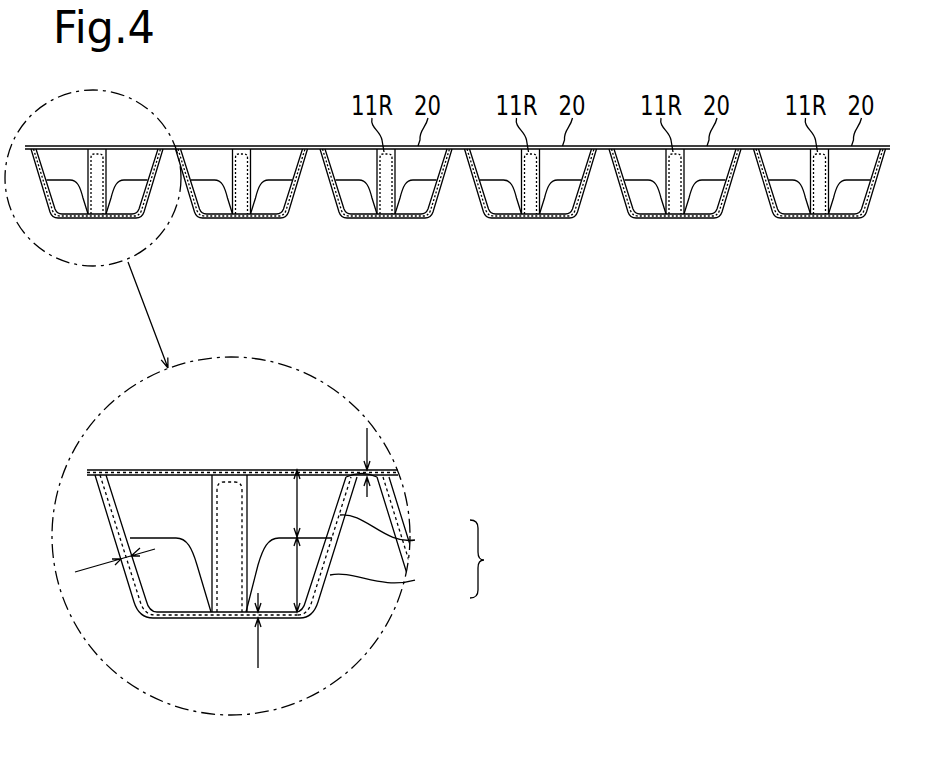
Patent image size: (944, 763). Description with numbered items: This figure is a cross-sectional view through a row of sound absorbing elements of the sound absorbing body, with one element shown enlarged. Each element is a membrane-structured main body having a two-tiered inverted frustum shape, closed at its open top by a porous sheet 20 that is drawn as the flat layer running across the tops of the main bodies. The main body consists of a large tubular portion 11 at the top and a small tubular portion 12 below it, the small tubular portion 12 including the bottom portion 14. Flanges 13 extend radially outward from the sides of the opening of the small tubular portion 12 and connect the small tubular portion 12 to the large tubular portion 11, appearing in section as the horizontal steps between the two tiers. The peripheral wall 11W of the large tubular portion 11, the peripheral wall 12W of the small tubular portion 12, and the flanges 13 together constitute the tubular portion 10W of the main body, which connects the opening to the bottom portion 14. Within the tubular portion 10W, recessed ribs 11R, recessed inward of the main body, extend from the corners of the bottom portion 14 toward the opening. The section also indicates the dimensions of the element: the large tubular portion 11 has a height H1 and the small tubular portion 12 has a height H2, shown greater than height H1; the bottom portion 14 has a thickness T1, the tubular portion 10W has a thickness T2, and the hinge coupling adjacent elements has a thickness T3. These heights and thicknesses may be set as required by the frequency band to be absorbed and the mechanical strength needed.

The porous sheet 20 is at (263, 468).
The rib 11R is at (227, 480).
The large tubular portion 11 is at (103, 507).
The small tubular portion 12 is at (122, 587).
The flange 13 is at (152, 537).
The bottom portion 14 is at (170, 620).
The height of the large tubular portion H1 is at (283, 503).
The height of the small tubular portion H2 is at (283, 574).
The thickness of the bottom portion T1 is at (272, 633).
The thickness of the tubular portion T2 is at (115, 553).
The thickness of the hinge T3 is at (351, 462).
The peripheral wall of the large tubular portion 11W is at (402, 534).
The peripheral wall of the small tubular portion 12W is at (397, 585).
The tubular portion 10W is at (504, 559).